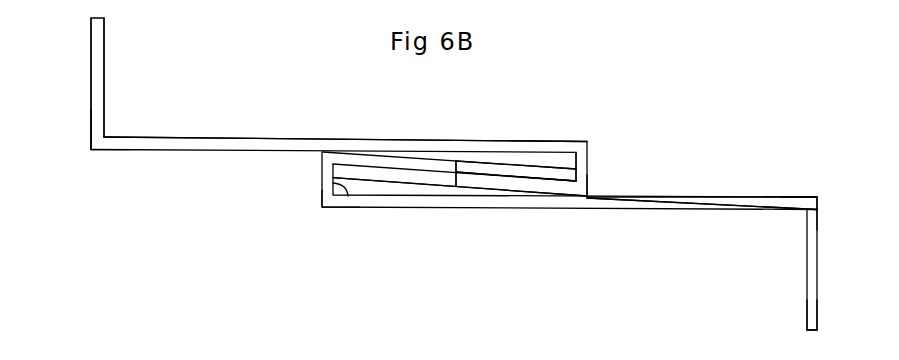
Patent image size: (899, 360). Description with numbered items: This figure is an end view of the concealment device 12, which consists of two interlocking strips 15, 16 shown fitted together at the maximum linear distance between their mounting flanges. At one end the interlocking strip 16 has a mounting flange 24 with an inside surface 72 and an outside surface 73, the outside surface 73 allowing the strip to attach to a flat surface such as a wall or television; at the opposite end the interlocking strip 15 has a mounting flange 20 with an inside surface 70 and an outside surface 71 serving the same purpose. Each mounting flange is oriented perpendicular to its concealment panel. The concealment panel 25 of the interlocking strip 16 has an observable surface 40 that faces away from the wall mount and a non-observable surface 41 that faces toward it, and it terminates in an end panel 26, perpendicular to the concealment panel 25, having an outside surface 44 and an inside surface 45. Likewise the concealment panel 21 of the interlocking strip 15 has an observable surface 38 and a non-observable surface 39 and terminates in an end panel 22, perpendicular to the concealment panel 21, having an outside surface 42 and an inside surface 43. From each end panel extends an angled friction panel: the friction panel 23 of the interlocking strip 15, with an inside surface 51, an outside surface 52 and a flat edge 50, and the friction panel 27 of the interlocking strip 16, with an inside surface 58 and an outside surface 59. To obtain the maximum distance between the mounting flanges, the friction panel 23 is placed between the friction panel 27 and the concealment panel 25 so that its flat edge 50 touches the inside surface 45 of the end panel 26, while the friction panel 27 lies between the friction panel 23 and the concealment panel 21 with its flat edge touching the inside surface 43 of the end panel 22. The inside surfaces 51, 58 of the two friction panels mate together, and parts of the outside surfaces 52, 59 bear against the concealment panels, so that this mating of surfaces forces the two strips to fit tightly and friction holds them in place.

The concealment device 12 is at (821, 252).
The interlocking strip 15 is at (804, 271).
The interlocking strip 16 is at (104, 50).
The mounting flange 20 is at (817, 197).
The concealment panel 21 is at (718, 210).
The end panel 22 is at (321, 181).
The friction panel 23 is at (405, 158).
The mounting flange 24 is at (90, 117).
The concealment panel 25 is at (338, 140).
The end panel 26 is at (587, 160).
The friction panel 27 is at (537, 192).
The observable surface 38 is at (663, 210).
The non-observable surface 39 is at (700, 197).
The observable surface 40 is at (216, 150).
The non-observable surface 41 is at (198, 137).
The outside surface 42 is at (321, 203).
The inside surface 43 is at (348, 196).
The outside surface 44 is at (587, 197).
The inside surface 45 is at (576, 160).
The flat edge 50 is at (576, 181).
The inside surface 51 is at (508, 172).
The outside surface 52 is at (497, 165).
The inside surface 58 is at (474, 180).
The outside surface 59 is at (400, 182).
The inside surface 70 is at (804, 311).
The outside surface 71 is at (813, 294).
The inside surface 72 is at (104, 97).
The outside surface 73 is at (91, 72).